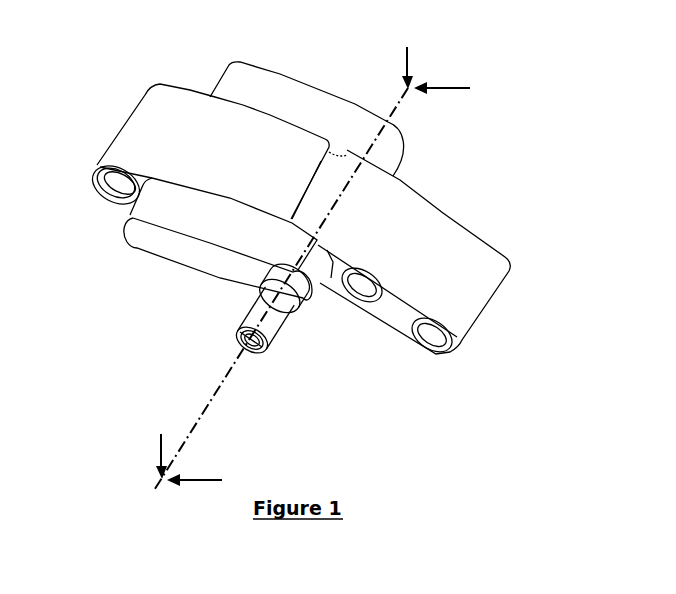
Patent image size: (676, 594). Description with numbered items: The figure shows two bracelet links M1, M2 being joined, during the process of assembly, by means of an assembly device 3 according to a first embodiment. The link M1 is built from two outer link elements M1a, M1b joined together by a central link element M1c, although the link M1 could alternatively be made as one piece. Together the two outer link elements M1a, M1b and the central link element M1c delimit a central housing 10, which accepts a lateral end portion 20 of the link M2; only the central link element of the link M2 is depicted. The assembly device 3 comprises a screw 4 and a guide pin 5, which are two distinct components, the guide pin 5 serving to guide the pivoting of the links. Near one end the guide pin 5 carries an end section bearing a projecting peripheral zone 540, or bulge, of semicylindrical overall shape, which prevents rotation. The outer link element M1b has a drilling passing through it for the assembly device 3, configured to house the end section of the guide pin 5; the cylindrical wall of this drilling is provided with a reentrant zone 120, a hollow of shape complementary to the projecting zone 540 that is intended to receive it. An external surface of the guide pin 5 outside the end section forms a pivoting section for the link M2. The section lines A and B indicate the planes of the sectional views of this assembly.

The link M1 is at (225, 167).
The outer link element M1a is at (265, 92).
The outer link element M1b is at (160, 245).
The central link element M1c is at (152, 128).
The link M2 is at (443, 261).
The central housing 10 is at (332, 150).
The lateral end portion 20 is at (352, 207).
The reentrant zone 120 is at (263, 282).
The projecting peripheral zone 540 is at (238, 322).
The guide pin 5 is at (233, 349).
The screw 4 is at (262, 350).
The assembly device 3 is at (248, 372).
The section line A is at (327, 287).
The section line B is at (282, 251).